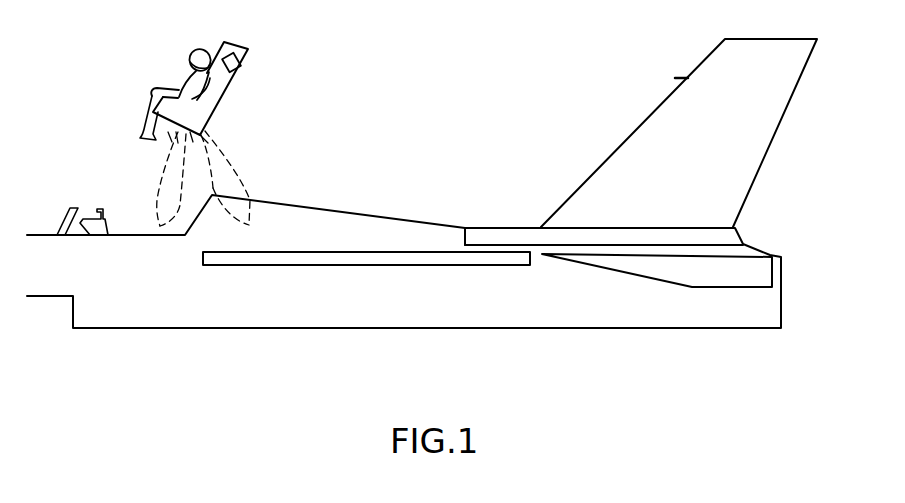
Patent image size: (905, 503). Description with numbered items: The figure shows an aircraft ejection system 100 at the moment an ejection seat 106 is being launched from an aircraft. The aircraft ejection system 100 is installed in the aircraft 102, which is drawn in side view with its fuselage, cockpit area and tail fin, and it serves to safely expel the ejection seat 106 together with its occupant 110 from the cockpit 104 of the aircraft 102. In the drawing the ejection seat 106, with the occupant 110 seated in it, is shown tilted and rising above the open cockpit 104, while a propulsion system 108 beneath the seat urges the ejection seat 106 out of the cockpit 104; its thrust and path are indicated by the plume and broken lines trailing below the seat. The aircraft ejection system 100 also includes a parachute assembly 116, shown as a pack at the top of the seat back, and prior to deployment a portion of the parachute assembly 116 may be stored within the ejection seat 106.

The aircraft ejection system 100 is at (329, 114).
The aircraft 102 is at (432, 300).
The cockpit 104 is at (120, 222).
The ejection seat 106 is at (198, 113).
The propulsion system 108 is at (218, 158).
The occupant 110 is at (193, 49).
The parachute assembly 116 is at (248, 48).